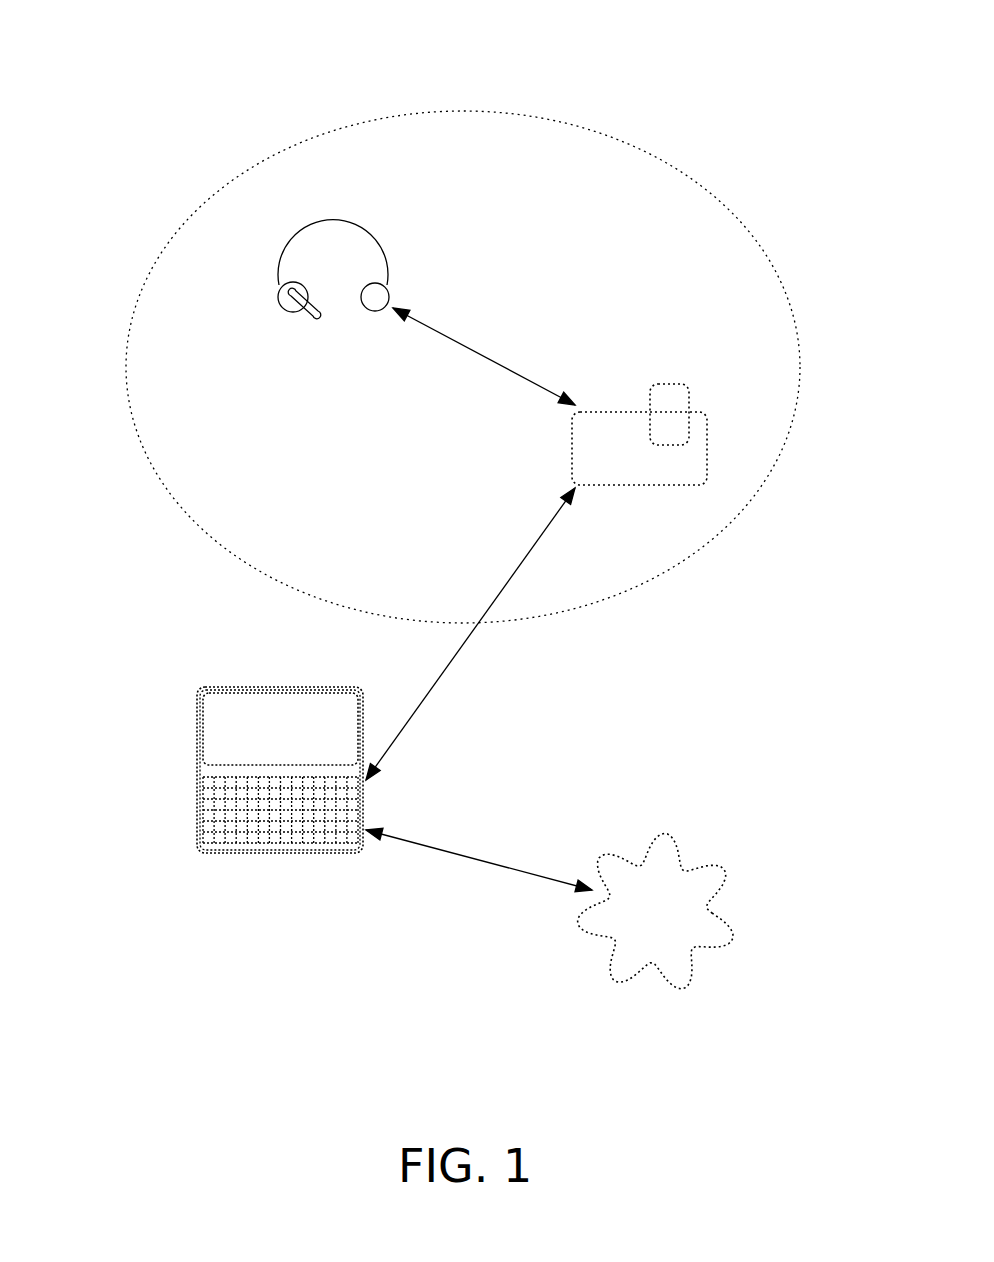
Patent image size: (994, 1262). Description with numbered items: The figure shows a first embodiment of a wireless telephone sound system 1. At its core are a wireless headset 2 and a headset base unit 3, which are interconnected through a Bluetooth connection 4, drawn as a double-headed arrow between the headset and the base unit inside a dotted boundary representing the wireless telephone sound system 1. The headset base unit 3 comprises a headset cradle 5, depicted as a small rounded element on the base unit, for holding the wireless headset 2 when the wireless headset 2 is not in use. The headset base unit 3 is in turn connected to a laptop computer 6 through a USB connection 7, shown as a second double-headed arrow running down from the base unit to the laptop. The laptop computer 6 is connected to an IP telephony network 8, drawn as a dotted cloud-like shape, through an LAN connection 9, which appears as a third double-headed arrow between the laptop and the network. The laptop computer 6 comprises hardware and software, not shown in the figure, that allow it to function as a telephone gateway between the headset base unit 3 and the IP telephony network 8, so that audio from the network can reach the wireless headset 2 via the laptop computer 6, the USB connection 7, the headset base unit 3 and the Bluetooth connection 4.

The wireless telephone sound system 1 is at (672, 153).
The wireless headset 2 is at (283, 215).
The headset base unit 3 is at (697, 473).
The Bluetooth connection 4 is at (465, 368).
The headset cradle 5 is at (680, 395).
The laptop computer 6 is at (198, 852).
The USB connection 7 is at (468, 655).
The IP telephony network 8 is at (678, 925).
The LAN connection 9 is at (462, 865).